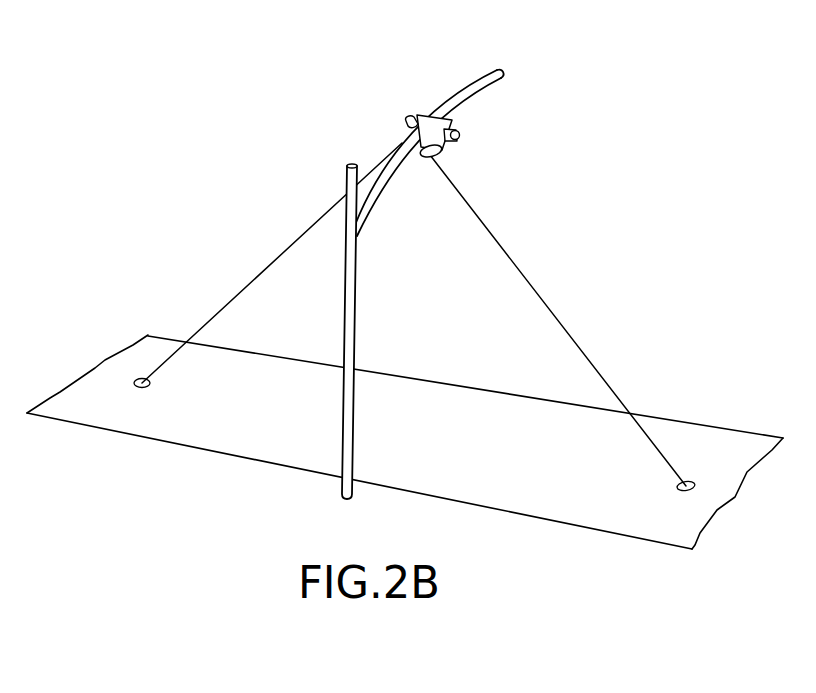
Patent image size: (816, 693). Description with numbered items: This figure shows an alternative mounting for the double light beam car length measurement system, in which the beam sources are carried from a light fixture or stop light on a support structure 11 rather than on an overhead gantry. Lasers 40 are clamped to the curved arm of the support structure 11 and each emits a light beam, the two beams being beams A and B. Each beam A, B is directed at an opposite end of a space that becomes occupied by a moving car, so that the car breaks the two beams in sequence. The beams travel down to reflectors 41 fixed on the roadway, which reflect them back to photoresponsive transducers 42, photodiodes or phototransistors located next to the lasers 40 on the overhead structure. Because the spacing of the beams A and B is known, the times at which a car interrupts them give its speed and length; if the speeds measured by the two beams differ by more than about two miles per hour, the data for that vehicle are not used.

The support structure 11 is at (356, 312).
The laser 40 is at (403, 128).
The reflector 41 is at (395, 147).
The photoresponsive transducer 42 is at (145, 388).
The light beam A is at (275, 258).
The light beam B is at (538, 290).